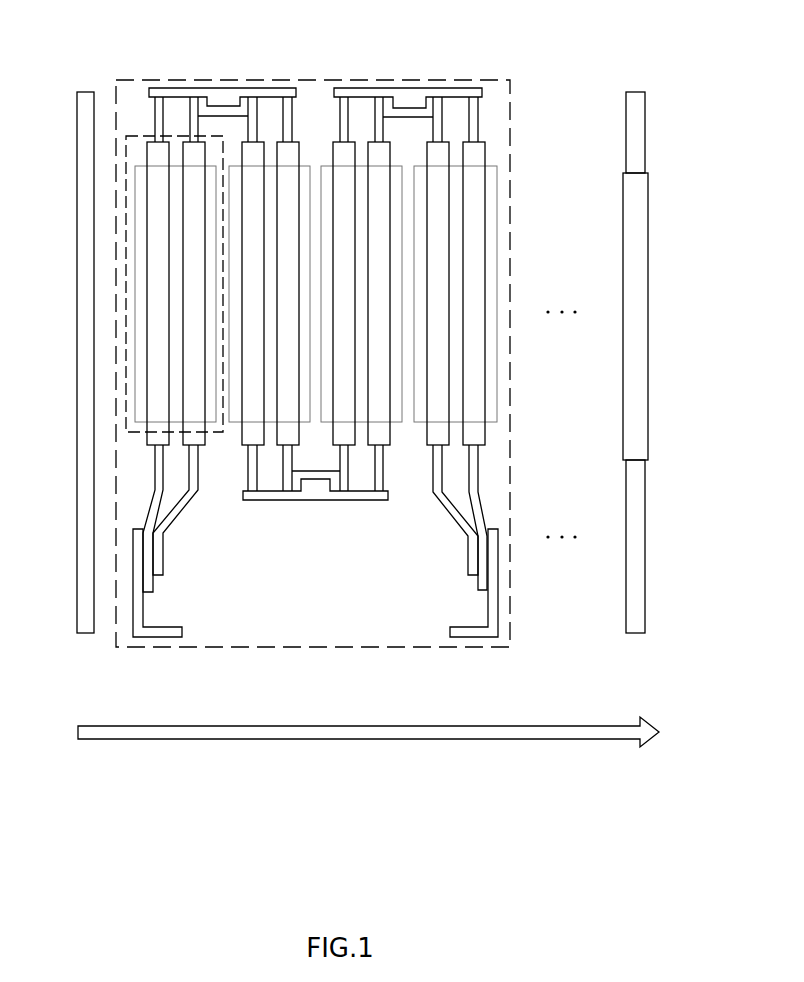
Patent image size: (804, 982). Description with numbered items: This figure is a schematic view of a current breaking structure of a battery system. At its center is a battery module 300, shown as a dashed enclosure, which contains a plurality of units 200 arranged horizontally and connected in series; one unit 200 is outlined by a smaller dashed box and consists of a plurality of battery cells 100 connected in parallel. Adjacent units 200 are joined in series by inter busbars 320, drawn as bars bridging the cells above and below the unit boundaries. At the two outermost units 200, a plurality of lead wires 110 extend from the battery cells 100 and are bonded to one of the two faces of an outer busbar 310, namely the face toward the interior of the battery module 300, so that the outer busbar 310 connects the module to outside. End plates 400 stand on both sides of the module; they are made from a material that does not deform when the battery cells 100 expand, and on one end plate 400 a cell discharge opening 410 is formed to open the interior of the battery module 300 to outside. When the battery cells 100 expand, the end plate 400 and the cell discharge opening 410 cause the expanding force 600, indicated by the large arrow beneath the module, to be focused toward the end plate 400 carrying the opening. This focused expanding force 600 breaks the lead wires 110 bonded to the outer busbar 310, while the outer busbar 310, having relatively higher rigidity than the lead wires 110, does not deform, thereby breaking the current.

The battery cell 100 is at (156, 148).
The lead wire 110 is at (184, 505).
The unit 200 is at (213, 133).
The battery module 300 is at (493, 80).
The outer busbar 310 is at (137, 613).
The inter busbar 320 is at (256, 93).
The end plate 400 is at (85, 623).
The cell discharge opening 410 is at (638, 298).
The expanding force 600 is at (483, 734).